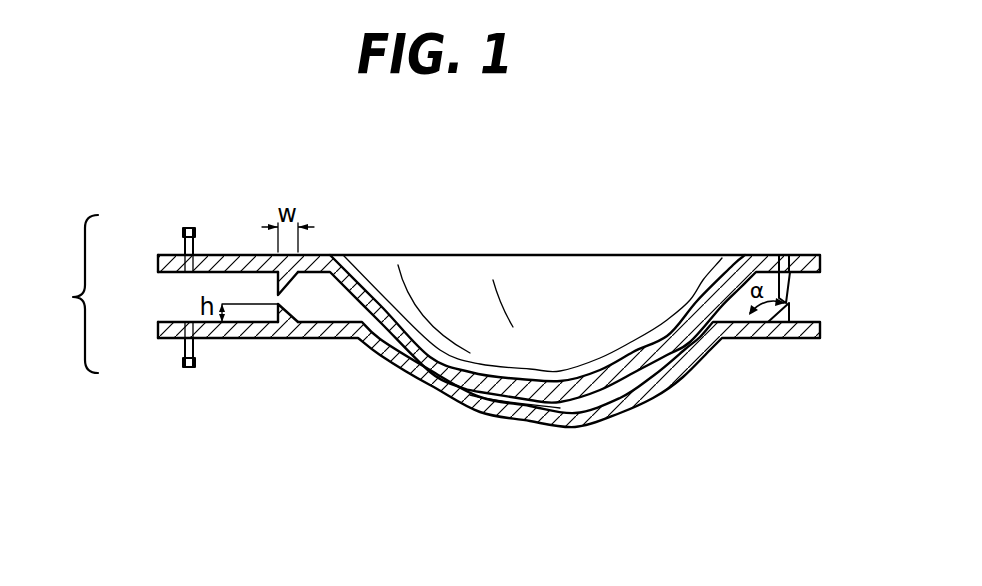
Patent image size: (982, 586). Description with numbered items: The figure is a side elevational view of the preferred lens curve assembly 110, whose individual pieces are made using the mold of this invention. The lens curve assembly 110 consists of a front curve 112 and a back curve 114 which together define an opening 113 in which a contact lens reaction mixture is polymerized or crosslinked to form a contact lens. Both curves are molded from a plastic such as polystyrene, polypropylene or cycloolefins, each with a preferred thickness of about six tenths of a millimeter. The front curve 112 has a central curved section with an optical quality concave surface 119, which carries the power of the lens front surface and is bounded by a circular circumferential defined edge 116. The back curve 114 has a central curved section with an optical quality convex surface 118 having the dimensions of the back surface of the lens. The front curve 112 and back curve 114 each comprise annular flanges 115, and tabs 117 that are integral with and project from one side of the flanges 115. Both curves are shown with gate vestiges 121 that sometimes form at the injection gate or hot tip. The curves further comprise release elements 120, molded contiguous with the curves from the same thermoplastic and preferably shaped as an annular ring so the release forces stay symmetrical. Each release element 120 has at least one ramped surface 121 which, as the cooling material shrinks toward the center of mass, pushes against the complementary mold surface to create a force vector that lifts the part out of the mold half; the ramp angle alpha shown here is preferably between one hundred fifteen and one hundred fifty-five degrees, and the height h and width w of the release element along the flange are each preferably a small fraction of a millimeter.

The lens curve assembly 110 is at (62, 294).
The front curve 112 is at (410, 400).
The opening 113 is at (608, 409).
The back curve 114 is at (629, 229).
The annular flanges 115 is at (779, 255).
The circular circumferential defined edge 116 is at (693, 308).
The tabs 117 is at (228, 256).
The optical quality convex surface 118 is at (478, 396).
The optical quality concave surface 119 is at (527, 400).
The release elements 120 is at (300, 274).
The ramped surface / gate vestiges 121 is at (188, 228).